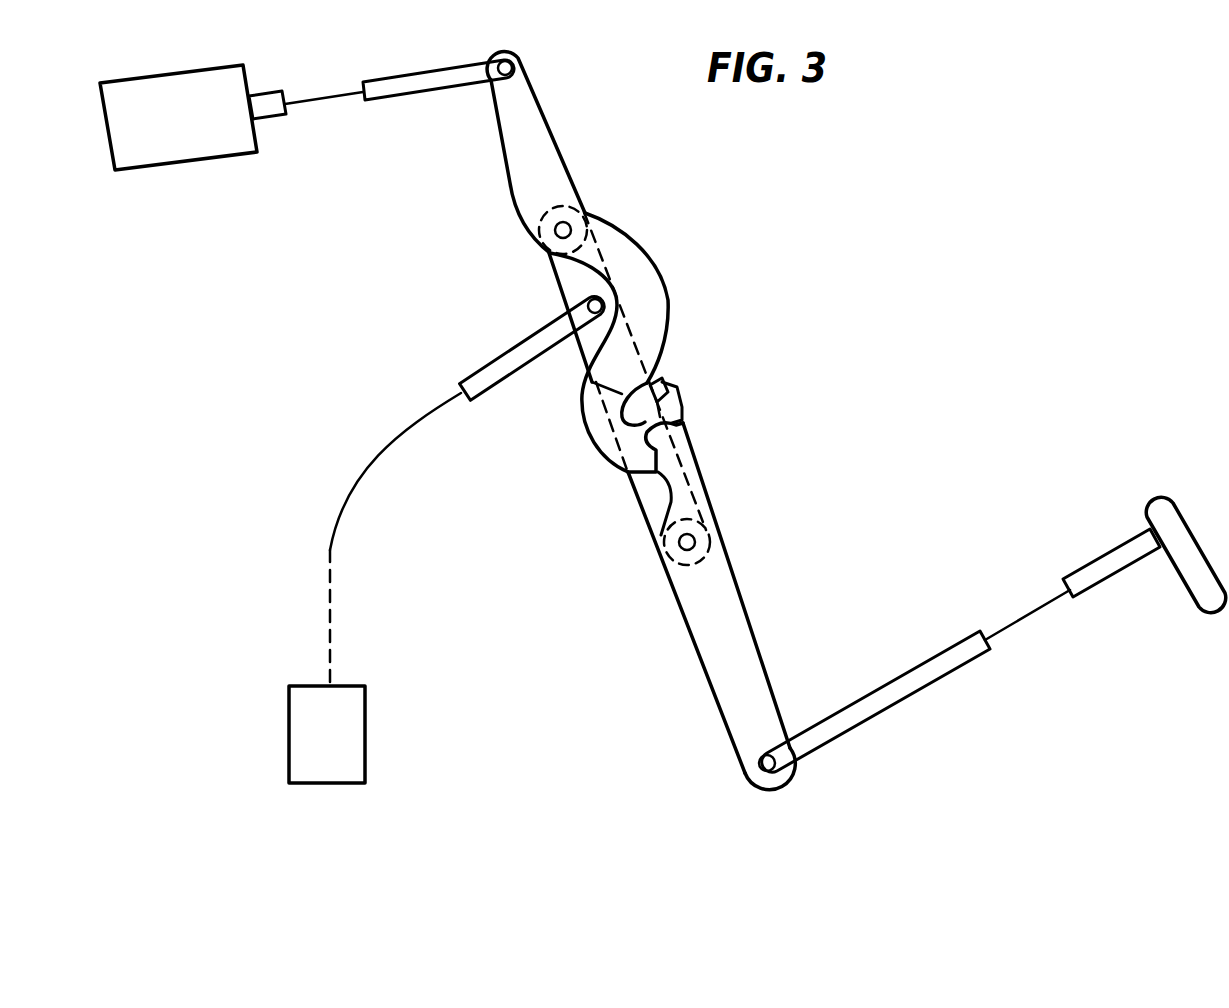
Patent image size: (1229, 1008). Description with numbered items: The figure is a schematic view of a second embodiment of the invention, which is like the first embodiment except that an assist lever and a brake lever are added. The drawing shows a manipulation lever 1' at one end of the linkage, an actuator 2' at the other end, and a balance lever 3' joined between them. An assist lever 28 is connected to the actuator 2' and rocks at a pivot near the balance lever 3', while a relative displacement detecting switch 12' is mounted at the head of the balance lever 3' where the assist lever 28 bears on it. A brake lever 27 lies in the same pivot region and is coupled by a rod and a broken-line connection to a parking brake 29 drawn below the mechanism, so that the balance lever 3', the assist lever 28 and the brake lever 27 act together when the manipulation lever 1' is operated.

The manipulation lever 1' is at (994, 634).
The actuator 2' is at (307, 151).
The balance lever 3' is at (695, 501).
The relative displacement detecting switch 12' is at (693, 372).
The brake lever 27 is at (556, 296).
The assist lever 28 is at (550, 130).
The parking brake 29 is at (323, 783).